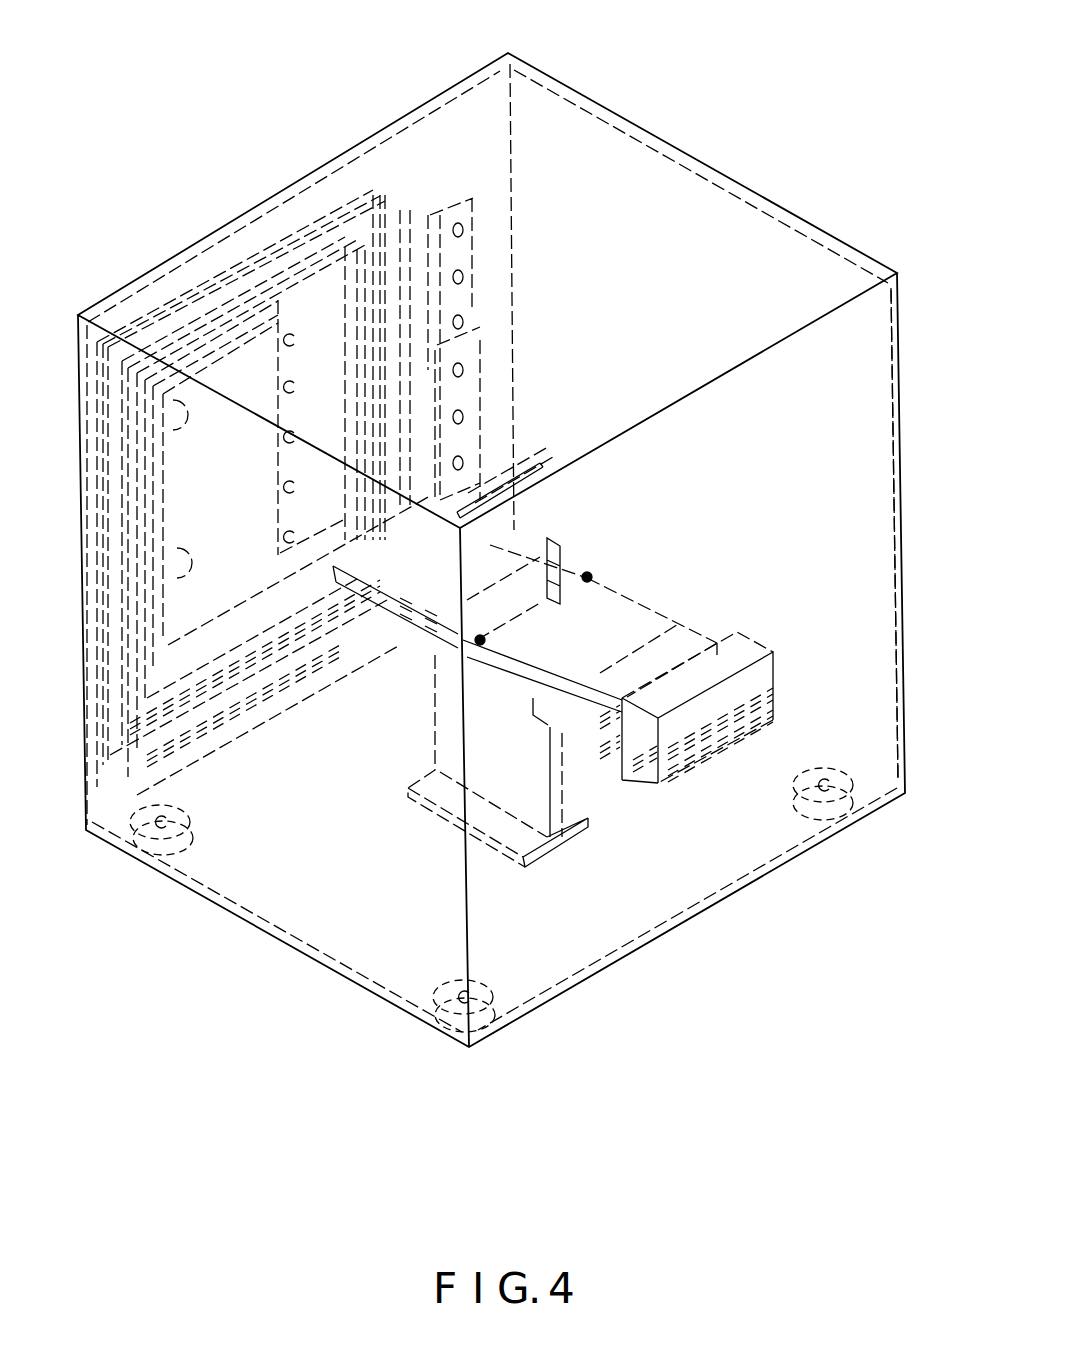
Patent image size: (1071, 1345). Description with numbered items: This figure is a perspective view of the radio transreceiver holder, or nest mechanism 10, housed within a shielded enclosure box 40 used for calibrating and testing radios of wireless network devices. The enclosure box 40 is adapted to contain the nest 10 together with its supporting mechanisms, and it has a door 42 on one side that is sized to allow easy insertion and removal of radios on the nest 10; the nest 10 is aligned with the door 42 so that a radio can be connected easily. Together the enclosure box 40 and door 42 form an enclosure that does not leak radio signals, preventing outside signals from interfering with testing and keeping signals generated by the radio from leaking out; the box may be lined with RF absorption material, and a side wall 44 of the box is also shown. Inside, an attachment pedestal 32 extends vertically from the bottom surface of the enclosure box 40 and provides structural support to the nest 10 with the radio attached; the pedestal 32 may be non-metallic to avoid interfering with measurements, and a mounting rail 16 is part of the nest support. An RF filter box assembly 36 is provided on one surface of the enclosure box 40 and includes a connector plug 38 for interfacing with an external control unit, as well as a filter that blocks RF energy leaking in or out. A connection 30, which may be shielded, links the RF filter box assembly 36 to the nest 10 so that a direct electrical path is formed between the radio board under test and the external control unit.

The enclosure box 40 is at (847, 90).
The door 42 is at (163, 313).
The side wall 44 is at (893, 395).
The mounting rail 16 is at (536, 515).
The nest mechanism 10 is at (447, 612).
The connection 30 is at (630, 613).
The attachment pedestal 32 is at (443, 738).
The RF filter box assembly 36 is at (705, 770).
The connector plug 38 is at (760, 682).